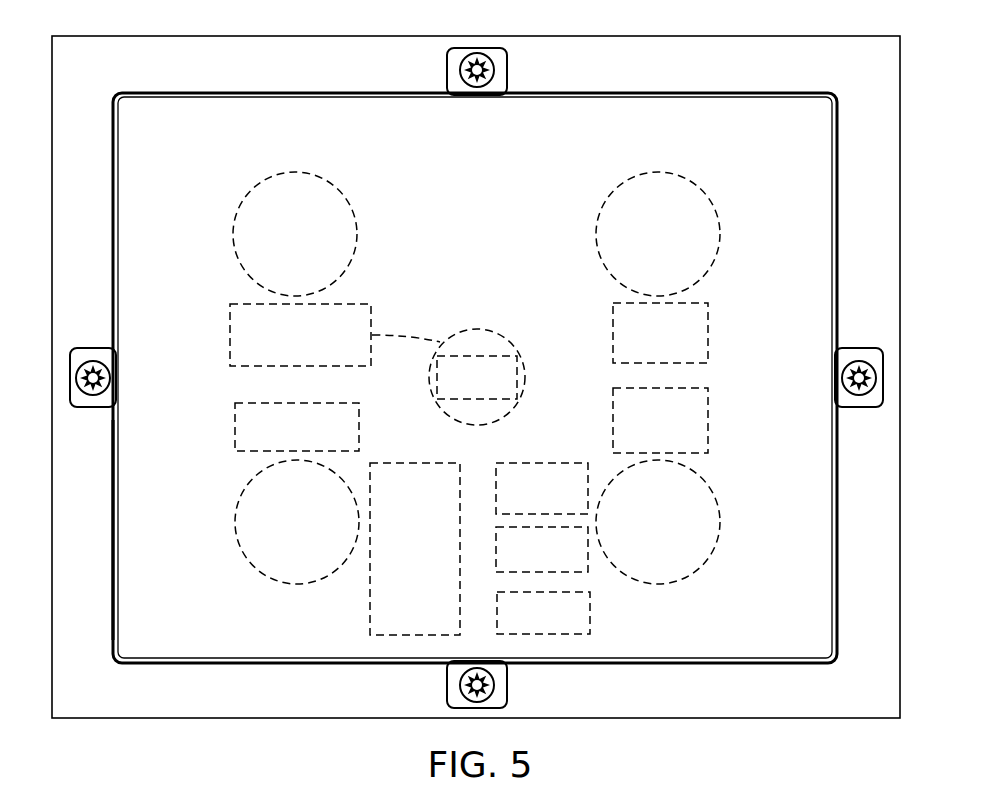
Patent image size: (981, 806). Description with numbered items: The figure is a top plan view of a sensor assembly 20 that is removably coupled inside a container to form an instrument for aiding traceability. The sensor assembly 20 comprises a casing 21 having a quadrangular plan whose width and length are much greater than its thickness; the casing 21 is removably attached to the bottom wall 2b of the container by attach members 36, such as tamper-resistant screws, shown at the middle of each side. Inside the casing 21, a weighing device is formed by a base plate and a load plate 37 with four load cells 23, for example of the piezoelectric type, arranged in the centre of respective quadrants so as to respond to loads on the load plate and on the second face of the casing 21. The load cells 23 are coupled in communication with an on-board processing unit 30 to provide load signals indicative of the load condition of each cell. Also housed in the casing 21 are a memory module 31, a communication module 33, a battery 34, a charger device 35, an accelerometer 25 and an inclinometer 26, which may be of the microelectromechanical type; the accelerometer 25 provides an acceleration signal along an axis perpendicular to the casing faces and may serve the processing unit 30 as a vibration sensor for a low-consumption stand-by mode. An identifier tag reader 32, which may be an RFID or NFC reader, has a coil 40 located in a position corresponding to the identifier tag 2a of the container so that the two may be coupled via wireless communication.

The sensor assembly 20 is at (750, 66).
The casing 21 is at (213, 92).
The identifier tag 2a is at (452, 402).
The bottom wall 2b is at (127, 705).
The load cells 23 is at (235, 220).
The accelerometer 25 is at (573, 573).
The inclinometer 26 is at (590, 623).
The on-board processing unit 30 is at (370, 608).
The memory module 31 is at (547, 462).
The identifier tag reader 32 is at (372, 313).
The communication module 33 is at (232, 433).
The battery 34 is at (712, 333).
The charger device 35 is at (712, 415).
The attach members 36 is at (447, 72).
The base plate and load plate 37 is at (127, 547).
The coil 40 is at (497, 330).